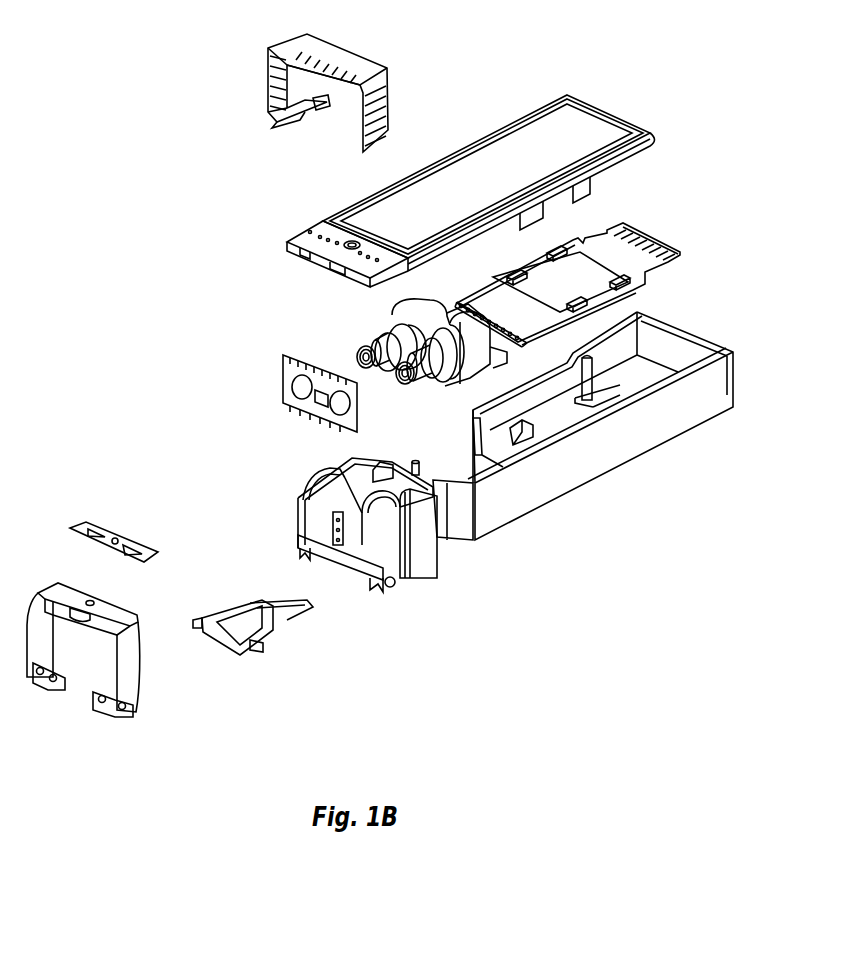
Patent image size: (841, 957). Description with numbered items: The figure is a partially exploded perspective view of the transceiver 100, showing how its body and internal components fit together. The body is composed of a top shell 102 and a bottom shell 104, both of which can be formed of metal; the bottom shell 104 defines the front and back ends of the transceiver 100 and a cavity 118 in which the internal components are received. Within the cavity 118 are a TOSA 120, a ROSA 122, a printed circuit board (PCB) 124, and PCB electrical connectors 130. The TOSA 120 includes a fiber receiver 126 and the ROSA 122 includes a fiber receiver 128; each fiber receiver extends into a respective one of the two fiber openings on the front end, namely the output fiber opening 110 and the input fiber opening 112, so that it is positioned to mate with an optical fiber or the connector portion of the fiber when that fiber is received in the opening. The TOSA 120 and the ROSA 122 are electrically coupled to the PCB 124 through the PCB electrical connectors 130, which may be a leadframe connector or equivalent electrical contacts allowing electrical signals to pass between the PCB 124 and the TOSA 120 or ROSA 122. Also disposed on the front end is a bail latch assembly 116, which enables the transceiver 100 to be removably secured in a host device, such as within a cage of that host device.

The transceiver 100 is at (150, 153).
The top shell 102 is at (528, 131).
The bottom shell 104 is at (590, 458).
The output fiber opening 110 is at (324, 515).
The input fiber opening 112 is at (363, 528).
The bail latch assembly 116 is at (189, 684).
The cavity 118 is at (569, 427).
The TOSA 120 is at (380, 306).
The ROSA 122 is at (453, 389).
The printed circuit board 124 is at (597, 242).
The fiber receiver 126 is at (356, 357).
The fiber receiver 128 is at (400, 375).
The PCB electrical connectors 130 is at (456, 300).